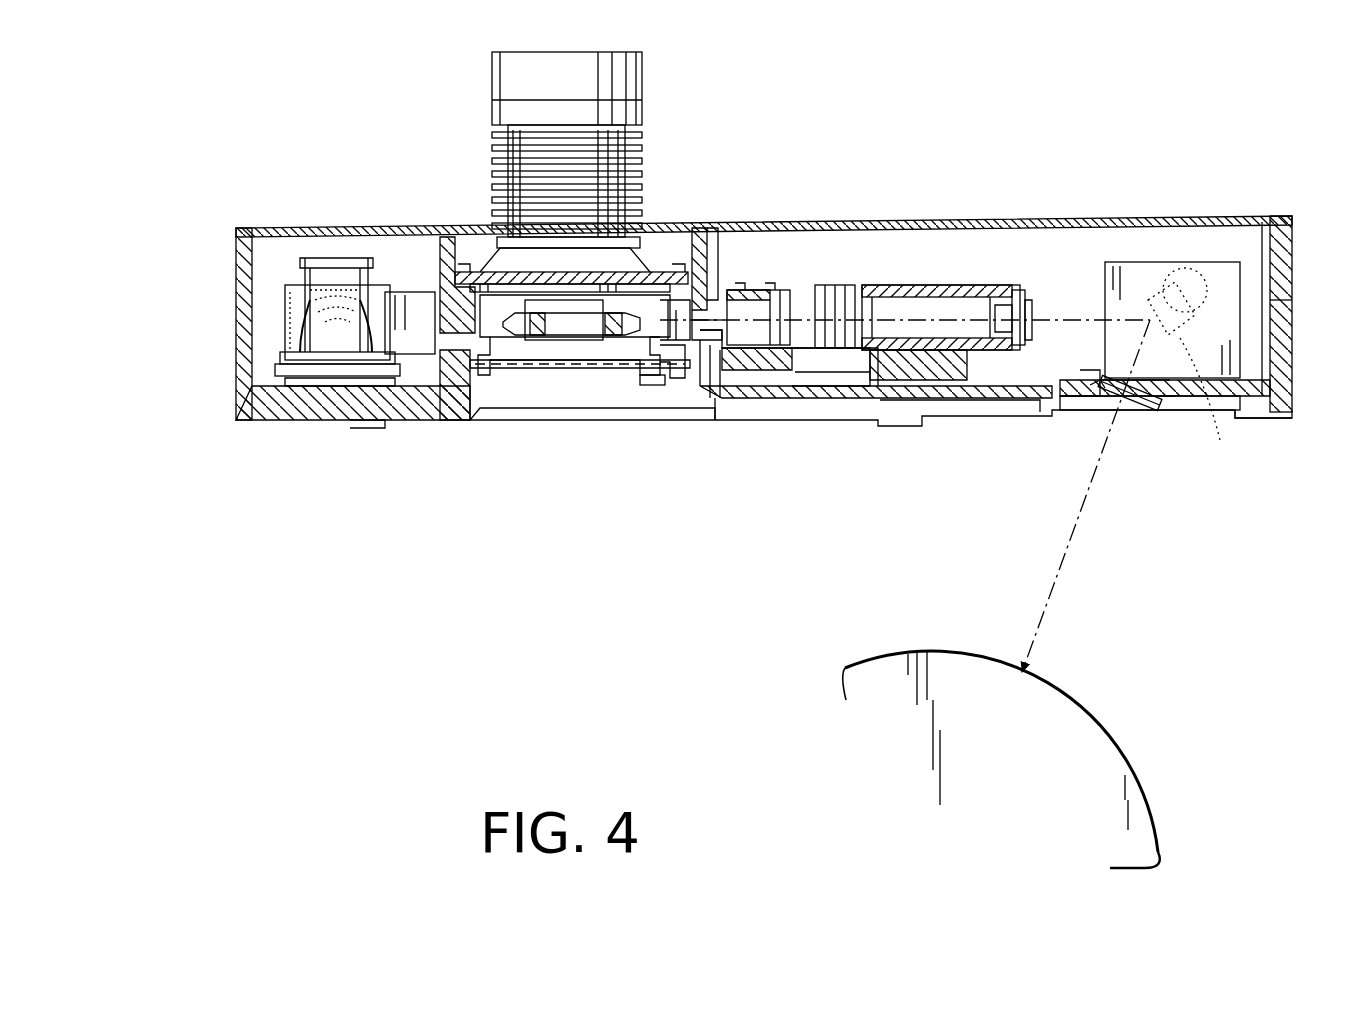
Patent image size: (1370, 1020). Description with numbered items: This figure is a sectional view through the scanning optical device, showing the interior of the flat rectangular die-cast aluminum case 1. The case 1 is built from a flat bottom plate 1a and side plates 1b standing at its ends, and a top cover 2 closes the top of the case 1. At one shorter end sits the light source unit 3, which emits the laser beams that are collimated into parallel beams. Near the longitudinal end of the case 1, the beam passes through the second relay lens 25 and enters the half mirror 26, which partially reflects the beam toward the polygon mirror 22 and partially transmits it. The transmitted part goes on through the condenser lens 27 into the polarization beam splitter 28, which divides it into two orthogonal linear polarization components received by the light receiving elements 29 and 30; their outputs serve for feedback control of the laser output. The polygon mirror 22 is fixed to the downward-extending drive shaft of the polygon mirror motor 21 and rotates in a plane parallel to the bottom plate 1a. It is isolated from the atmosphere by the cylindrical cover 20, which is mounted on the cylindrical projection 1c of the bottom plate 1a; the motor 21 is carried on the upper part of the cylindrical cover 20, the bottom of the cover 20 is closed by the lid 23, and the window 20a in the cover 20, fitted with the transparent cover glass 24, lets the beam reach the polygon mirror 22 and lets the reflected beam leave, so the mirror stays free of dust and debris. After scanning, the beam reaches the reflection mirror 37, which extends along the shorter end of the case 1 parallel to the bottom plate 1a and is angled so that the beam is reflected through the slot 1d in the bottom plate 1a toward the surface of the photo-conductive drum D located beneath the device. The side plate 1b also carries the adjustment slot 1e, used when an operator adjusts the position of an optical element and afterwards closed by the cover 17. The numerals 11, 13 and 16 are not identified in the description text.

The case 1 is at (240, 363).
The bottom plate 1a is at (1085, 380).
The side plate 1b is at (237, 283).
The cylindrical projection 1c is at (714, 395).
The slot 1d is at (1158, 405).
The adjustment slot 1e is at (1292, 296).
The top cover 2 is at (327, 227).
The light source unit 3 is at (373, 278).
The heat sink 11 is at (662, 163).
The rotary reflector unit 13 is at (1215, 265).
The mirror 16 is at (1130, 420).
The cover 17 is at (1292, 385).
The cylindrical cover 20 is at (720, 247).
The window 20a is at (710, 310).
The polygon mirror motor 21 is at (663, 247).
The polygon mirror 22 is at (590, 325).
The lid 23 is at (528, 380).
The transparent cover glass 24 is at (670, 380).
The second relay lens 25 is at (772, 352).
The half mirror 26 is at (832, 282).
The condenser lens 27 is at (848, 350).
The polarization beam splitter 28 is at (1007, 350).
The light receiving element 29 is at (990, 290).
The light receiving element 30 is at (1030, 310).
The reflection mirror 37 is at (1220, 440).
The photo-conductive drum D is at (1127, 775).